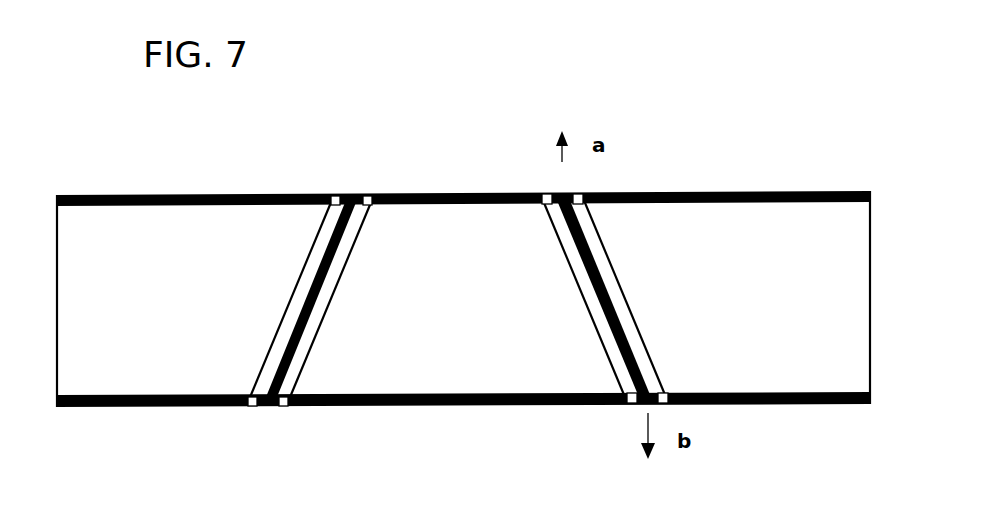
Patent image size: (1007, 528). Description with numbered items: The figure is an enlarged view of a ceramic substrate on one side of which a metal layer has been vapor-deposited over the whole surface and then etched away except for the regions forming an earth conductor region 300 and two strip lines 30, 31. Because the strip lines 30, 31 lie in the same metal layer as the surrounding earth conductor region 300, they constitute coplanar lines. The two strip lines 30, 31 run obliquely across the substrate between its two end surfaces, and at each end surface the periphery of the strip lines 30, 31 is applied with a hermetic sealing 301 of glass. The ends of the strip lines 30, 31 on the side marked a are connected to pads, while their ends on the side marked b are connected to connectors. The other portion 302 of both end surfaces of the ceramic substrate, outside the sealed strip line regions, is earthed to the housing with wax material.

The strip line 30 is at (323, 277).
The strip line 31 is at (582, 258).
The earth conductor region 300 is at (195, 270).
The hermetic sealing 301 is at (368, 194).
The other portion of end surface 302 is at (287, 193).